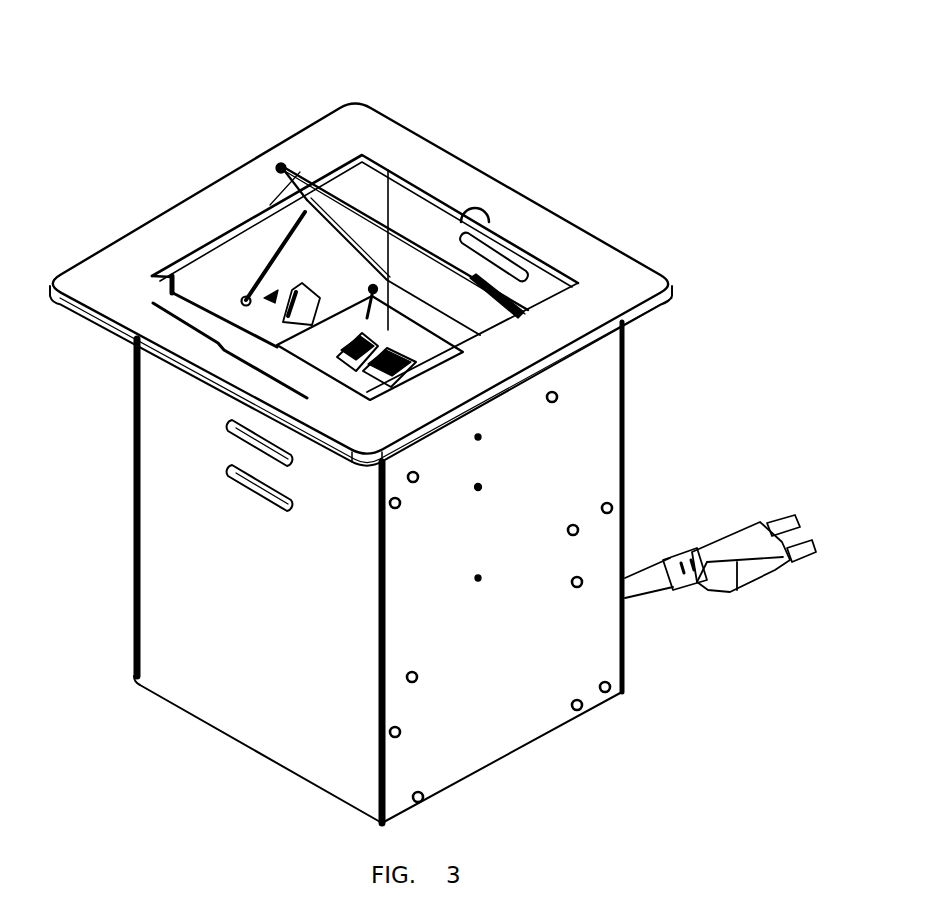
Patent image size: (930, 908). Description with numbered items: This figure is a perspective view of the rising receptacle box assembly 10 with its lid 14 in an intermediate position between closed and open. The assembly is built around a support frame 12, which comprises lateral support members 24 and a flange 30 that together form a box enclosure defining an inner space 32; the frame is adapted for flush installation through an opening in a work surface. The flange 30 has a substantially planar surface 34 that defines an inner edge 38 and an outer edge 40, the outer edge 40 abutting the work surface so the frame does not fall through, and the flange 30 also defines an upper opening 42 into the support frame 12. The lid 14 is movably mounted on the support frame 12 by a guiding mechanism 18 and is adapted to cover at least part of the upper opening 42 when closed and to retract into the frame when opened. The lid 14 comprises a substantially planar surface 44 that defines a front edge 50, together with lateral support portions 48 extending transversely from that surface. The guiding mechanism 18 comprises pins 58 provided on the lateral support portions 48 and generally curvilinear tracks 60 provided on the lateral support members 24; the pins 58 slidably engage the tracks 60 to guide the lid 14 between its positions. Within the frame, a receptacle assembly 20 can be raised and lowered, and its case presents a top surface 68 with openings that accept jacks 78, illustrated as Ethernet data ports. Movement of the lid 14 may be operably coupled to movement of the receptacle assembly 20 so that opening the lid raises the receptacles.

The rising receptacle box assembly 10 is at (214, 103).
The support frame 12 is at (184, 532).
The lid 14 is at (396, 232).
The guiding mechanism 18 is at (334, 178).
The receptacle assembly 20 is at (318, 357).
The lateral support members 24 is at (214, 262).
The flange 30 is at (130, 249).
The inner space 32 is at (452, 340).
The planar surface 34 is at (92, 273).
The inner edge 38 is at (490, 230).
The outer edge 40 is at (636, 318).
The upper opening 42 is at (172, 283).
The planar surface 44 is at (318, 235).
The lateral support portions 48 is at (296, 258).
The front edge 50 is at (278, 165).
The pins 58 is at (300, 287).
The tracks 60 is at (242, 298).
The top surface 68 is at (352, 378).
The jacks 78 is at (415, 362).